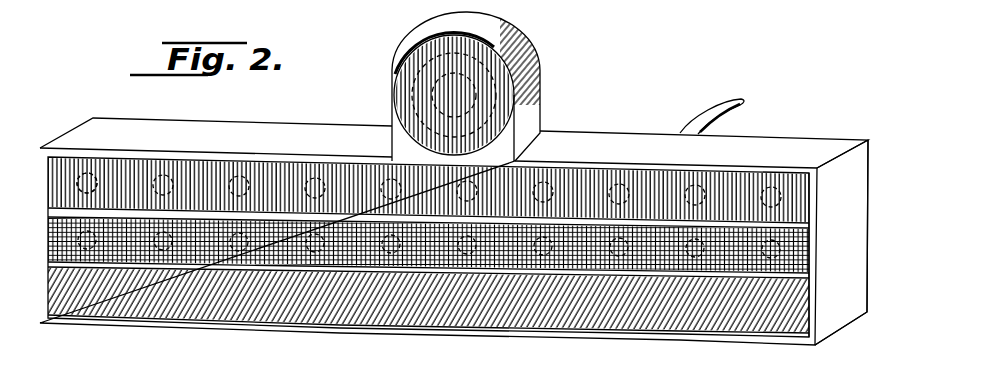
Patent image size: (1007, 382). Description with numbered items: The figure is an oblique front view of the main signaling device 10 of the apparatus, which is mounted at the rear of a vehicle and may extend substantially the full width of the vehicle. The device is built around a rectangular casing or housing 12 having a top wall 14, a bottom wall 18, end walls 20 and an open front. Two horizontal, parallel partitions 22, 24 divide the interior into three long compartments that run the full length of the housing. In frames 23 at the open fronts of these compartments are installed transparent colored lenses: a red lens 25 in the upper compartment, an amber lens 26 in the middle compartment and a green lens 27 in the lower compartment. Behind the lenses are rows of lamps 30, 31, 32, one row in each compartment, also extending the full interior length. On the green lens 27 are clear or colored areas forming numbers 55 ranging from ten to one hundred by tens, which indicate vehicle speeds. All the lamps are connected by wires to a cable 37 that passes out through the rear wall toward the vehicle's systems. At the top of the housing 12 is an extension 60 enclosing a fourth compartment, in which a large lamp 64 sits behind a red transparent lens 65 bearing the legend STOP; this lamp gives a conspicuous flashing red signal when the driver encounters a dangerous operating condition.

The main signaling device 10 is at (289, 344).
The housing 12 is at (800, 136).
The top wall 14 is at (755, 143).
The bottom wall 18 is at (347, 333).
The end walls 20 is at (834, 304).
The partition 22 is at (513, 222).
The frames 23 is at (816, 205).
The partition 24 is at (578, 272).
The red lens 25 is at (110, 175).
The amber lens 26 is at (60, 249).
The green lens 27 is at (137, 312).
The lamps 30 is at (72, 162).
The lamps 31 is at (95, 247).
The lamps 32 is at (428, 320).
The cable 37 is at (713, 115).
The numbers 55 is at (187, 305).
The extension 60 is at (525, 113).
The large lamp 64 is at (392, 70).
The lens 65 is at (492, 82).